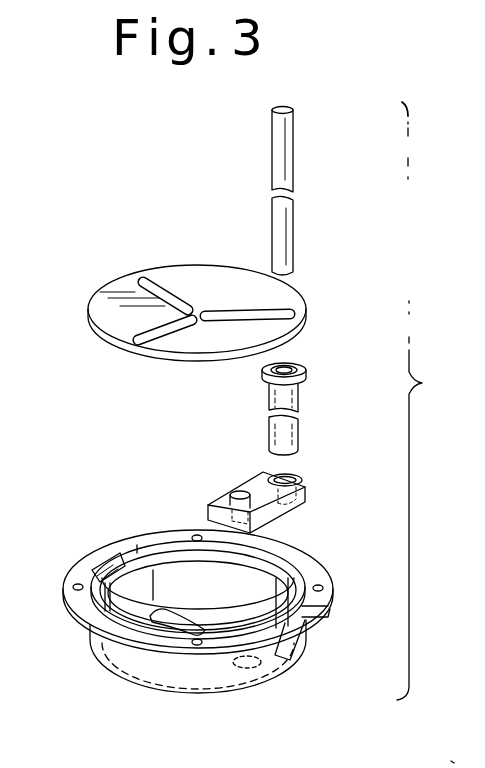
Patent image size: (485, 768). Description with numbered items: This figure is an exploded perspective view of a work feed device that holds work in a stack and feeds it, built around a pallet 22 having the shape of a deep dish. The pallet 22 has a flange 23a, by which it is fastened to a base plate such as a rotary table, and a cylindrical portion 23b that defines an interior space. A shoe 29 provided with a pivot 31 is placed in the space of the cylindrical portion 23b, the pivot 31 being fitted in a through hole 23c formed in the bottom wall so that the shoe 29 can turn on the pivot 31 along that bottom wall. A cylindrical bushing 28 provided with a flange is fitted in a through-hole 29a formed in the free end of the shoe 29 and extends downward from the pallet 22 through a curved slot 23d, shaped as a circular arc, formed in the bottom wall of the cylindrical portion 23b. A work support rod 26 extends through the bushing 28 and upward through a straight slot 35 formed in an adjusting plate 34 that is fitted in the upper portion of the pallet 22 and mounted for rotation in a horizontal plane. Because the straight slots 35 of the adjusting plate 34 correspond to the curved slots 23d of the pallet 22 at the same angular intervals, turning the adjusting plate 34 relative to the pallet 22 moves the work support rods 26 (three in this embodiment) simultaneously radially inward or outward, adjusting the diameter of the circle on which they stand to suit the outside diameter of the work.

The pallet 22 is at (147, 575).
The flange 23a is at (333, 610).
The cylindrical portion 23b is at (228, 599).
The through hole 23c is at (262, 672).
The curved slot 23d is at (92, 578).
The work support rod 26 is at (295, 142).
The cylindrical bushing 28 is at (300, 392).
The shoe 29 is at (282, 508).
The through-hole 29a is at (295, 474).
The pivot 31 is at (231, 488).
The adjusting plate 34 is at (193, 273).
The straight slot 35 is at (152, 333).